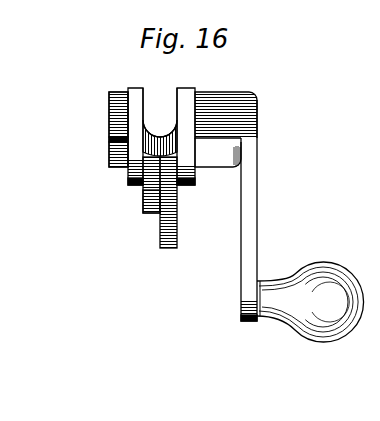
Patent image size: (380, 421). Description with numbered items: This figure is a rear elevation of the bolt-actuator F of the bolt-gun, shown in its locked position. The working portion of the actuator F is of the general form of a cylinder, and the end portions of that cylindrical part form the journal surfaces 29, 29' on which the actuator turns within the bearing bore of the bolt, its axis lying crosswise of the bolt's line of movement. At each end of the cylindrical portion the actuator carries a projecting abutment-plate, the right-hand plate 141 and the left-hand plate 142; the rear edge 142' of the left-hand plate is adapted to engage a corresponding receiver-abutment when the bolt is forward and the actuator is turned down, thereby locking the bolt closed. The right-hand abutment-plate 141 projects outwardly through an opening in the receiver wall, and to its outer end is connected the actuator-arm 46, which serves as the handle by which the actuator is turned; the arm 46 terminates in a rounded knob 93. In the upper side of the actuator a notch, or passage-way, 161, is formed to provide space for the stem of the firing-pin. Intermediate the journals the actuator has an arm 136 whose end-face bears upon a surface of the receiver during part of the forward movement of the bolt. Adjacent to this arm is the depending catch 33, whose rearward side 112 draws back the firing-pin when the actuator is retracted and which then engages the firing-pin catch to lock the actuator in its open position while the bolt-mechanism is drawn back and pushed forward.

The bolt-actuator F is at (110, 120).
The abutment-plate 142 is at (86, 111).
The rear edge of abutment-plate 142' is at (87, 155).
The notch 161 is at (157, 108).
The abutment-plate 141 is at (202, 108).
The journal surface 29 is at (191, 161).
The journal surface 29' is at (115, 153).
The rearward side of arm 112 is at (155, 170).
The catch 33 is at (153, 205).
The arm 136 is at (168, 238).
The actuator-arm 46 is at (244, 203).
The knob 93 is at (310, 339).